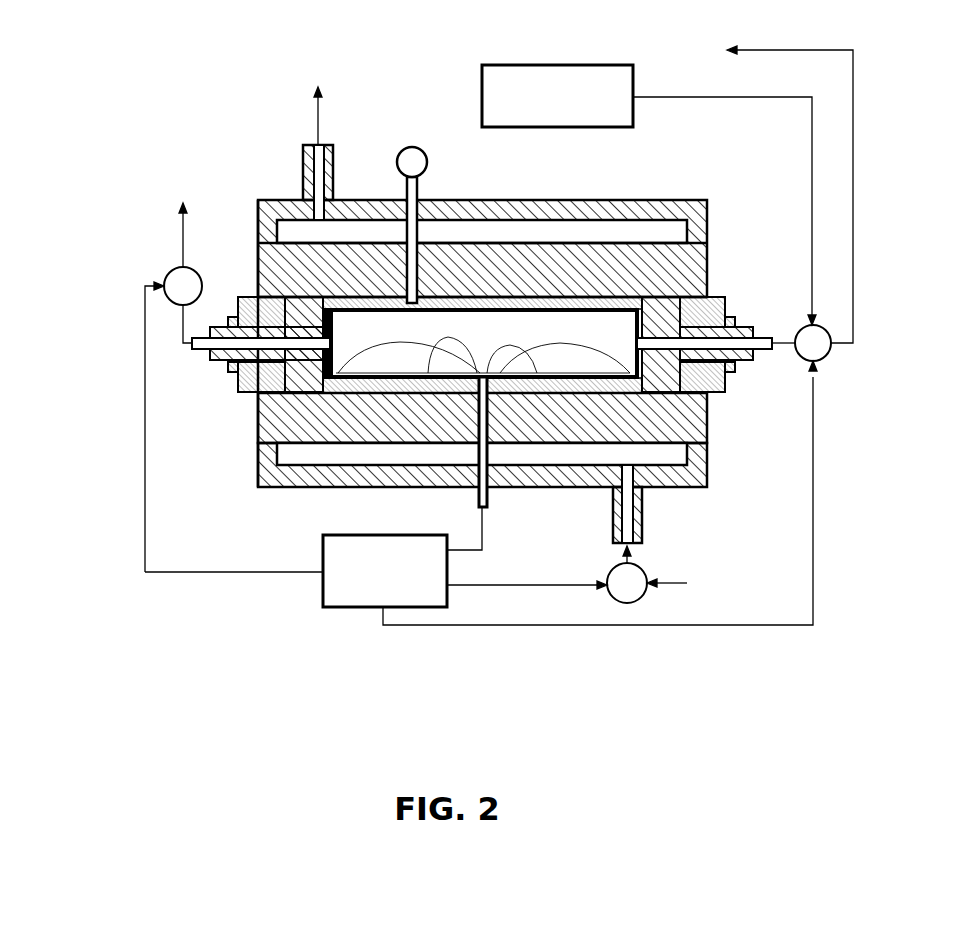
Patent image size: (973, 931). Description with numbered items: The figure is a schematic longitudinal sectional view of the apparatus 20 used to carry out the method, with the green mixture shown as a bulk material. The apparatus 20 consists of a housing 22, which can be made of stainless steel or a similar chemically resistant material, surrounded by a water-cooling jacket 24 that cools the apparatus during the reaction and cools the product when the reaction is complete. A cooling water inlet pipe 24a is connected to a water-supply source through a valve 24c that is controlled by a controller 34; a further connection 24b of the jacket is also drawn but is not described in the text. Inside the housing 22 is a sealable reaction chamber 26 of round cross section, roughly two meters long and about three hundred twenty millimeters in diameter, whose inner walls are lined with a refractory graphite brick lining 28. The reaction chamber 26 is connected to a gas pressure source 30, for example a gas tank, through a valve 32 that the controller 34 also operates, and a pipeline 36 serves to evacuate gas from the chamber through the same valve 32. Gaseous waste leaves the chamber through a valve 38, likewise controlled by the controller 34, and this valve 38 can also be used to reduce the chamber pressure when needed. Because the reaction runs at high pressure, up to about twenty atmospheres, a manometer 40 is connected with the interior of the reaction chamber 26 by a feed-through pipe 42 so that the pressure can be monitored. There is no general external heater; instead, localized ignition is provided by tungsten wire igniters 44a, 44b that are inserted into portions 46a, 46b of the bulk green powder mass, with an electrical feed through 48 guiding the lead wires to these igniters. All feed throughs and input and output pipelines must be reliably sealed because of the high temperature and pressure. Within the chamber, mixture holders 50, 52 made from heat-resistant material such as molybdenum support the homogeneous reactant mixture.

The apparatus 20 is at (263, 149).
The housing 22 is at (457, 238).
The water-cooling jacket 24 is at (352, 190).
The cooling water inlet pipe 24a is at (653, 520).
The gas inlet pipe 24b is at (295, 147).
The valve 24c is at (627, 603).
The reaction chamber 26 is at (255, 248).
The graphite brick lining 28 is at (637, 243).
The gas pressure source 30 is at (573, 65).
The valve 32 is at (833, 360).
The controller 34 is at (355, 607).
The pipeline 36 is at (762, 55).
The valve 38 is at (162, 270).
The manometer 40 is at (413, 146).
The feed-through pipe 42 is at (402, 193).
The tungsten wire igniter 44a is at (530, 490).
The tungsten wire igniter 44b is at (473, 490).
The portion of bulk green powder mass 46a is at (710, 437).
The portion of bulk green powder mass 46b is at (270, 487).
The electrical feed through 48 is at (487, 500).
The mixture holder 50 is at (708, 477).
The mixture holder 52 is at (313, 488).